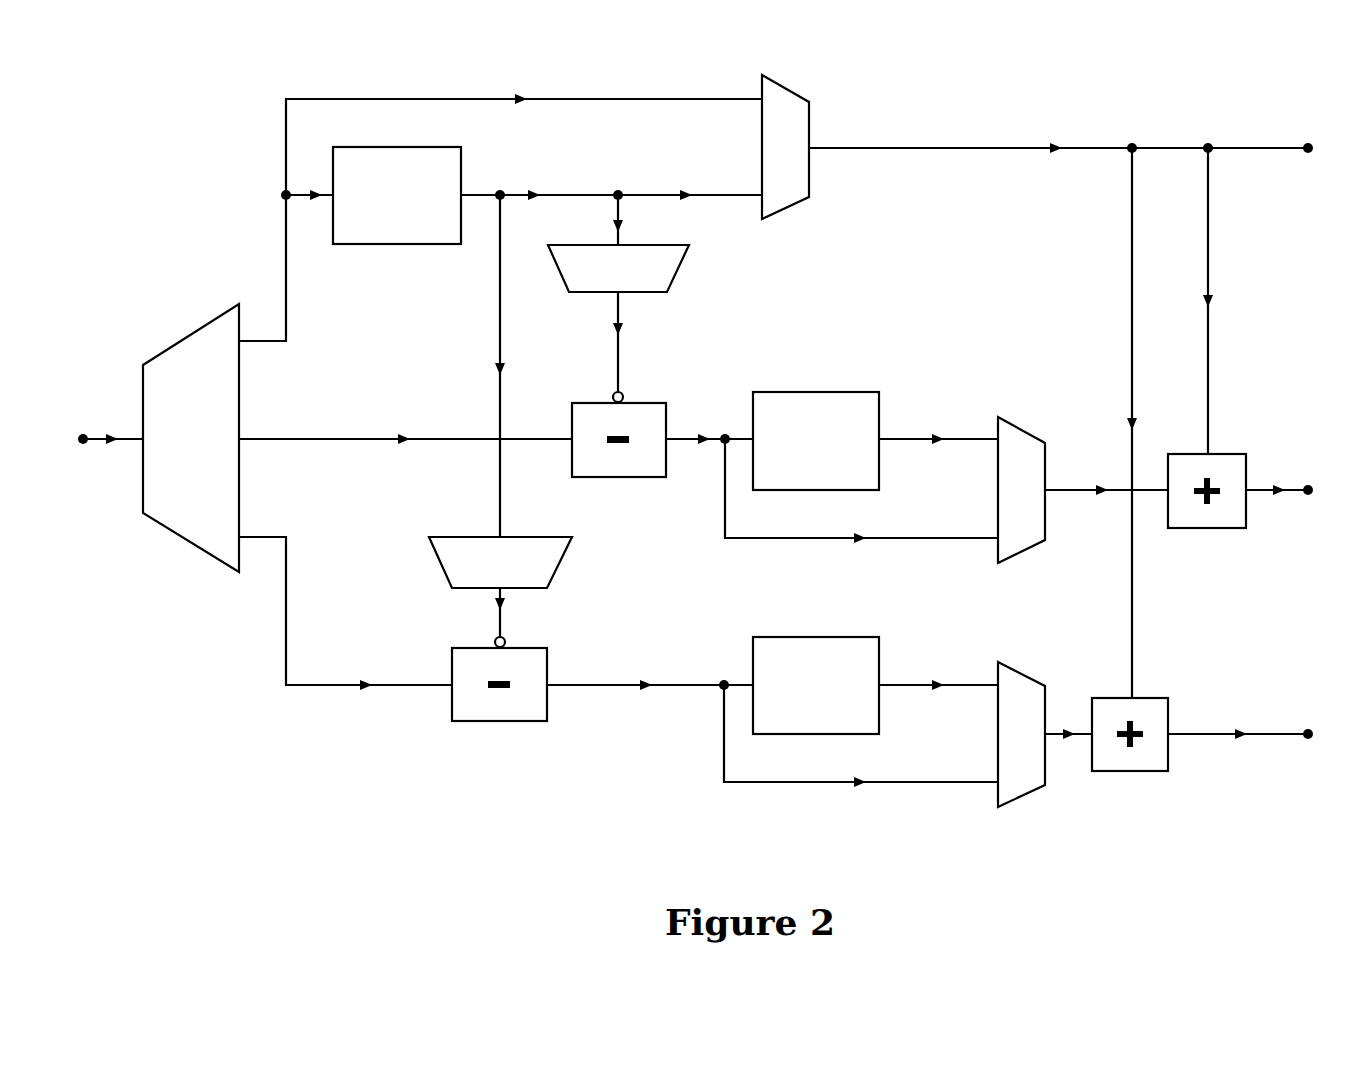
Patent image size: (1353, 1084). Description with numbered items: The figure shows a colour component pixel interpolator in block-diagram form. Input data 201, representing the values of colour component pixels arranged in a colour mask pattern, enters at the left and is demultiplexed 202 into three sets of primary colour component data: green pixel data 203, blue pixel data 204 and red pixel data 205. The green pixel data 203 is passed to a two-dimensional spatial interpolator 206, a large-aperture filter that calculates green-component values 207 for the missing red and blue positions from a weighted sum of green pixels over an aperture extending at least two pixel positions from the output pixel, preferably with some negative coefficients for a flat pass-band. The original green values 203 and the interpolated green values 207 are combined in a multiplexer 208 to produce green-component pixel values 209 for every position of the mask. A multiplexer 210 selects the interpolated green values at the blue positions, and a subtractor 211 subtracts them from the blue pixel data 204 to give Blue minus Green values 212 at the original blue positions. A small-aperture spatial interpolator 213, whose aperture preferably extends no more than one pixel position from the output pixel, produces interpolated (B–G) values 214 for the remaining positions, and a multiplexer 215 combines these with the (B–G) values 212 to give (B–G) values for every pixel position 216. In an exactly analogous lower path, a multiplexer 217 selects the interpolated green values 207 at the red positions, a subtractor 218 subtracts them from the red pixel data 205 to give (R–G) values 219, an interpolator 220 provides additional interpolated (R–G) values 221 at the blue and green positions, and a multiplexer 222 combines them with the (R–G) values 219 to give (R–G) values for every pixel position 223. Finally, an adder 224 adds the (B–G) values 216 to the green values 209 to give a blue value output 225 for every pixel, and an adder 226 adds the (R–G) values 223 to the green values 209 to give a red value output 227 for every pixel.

The input data 201 is at (97, 457).
The demultiplexer 202 is at (163, 537).
The green pixel data 203 is at (282, 246).
The blue pixel data 204 is at (350, 436).
The red pixel data 205 is at (300, 695).
The two-dimensional spatial interpolator 206 is at (376, 250).
The interpolated green-component values 207 is at (570, 188).
The multiplexer 208 is at (800, 86).
The green-component pixel values 209 is at (1274, 140).
The multiplexer 210 is at (684, 263).
The subtractor 211 is at (650, 397).
The Blue minus Green values 212 is at (700, 455).
The spatial interpolator 213 is at (820, 388).
The interpolated (B–G) values 214 is at (918, 435).
The multiplexer 215 is at (1020, 415).
The (B–G) values for every pixel position 216 is at (1080, 502).
The multiplexer 217 is at (440, 534).
The subtractor 218 is at (455, 725).
The (R–G) values 219 is at (592, 697).
The interpolator 220 is at (795, 634).
The interpolated (R–G) component values 221 is at (898, 680).
The multiplexer 222 is at (1028, 812).
The (R–G) values for every pixel position 223 is at (1068, 726).
The adder 224 is at (1183, 530).
The blue value output 225 is at (1260, 488).
The adder 226 is at (1140, 775).
The red value output 227 is at (1205, 728).